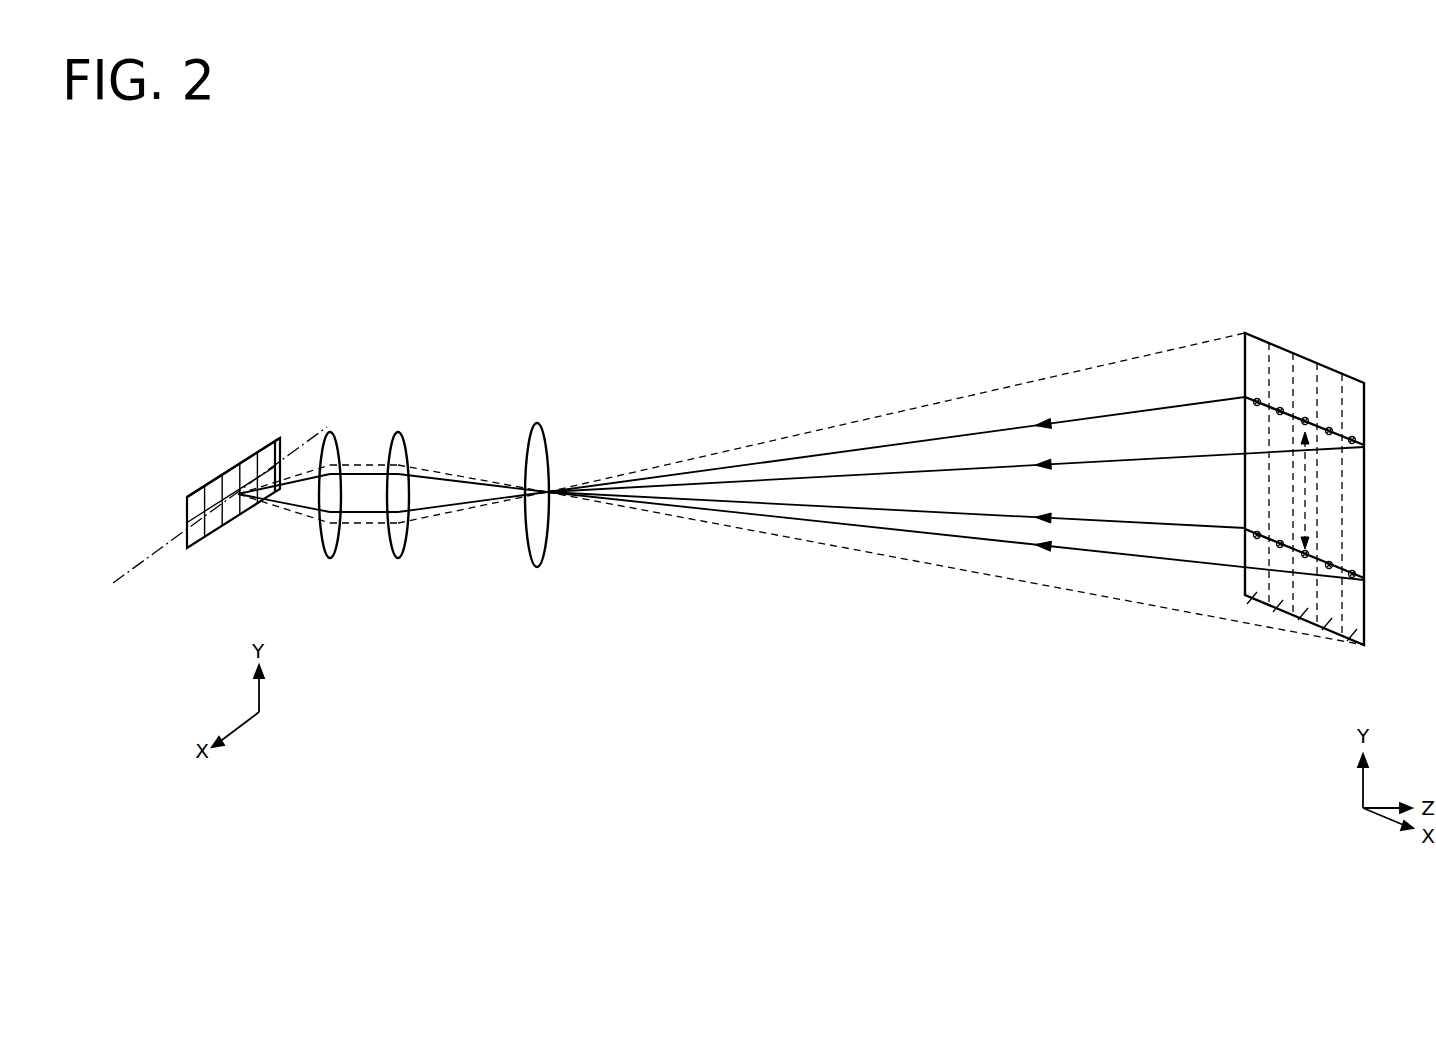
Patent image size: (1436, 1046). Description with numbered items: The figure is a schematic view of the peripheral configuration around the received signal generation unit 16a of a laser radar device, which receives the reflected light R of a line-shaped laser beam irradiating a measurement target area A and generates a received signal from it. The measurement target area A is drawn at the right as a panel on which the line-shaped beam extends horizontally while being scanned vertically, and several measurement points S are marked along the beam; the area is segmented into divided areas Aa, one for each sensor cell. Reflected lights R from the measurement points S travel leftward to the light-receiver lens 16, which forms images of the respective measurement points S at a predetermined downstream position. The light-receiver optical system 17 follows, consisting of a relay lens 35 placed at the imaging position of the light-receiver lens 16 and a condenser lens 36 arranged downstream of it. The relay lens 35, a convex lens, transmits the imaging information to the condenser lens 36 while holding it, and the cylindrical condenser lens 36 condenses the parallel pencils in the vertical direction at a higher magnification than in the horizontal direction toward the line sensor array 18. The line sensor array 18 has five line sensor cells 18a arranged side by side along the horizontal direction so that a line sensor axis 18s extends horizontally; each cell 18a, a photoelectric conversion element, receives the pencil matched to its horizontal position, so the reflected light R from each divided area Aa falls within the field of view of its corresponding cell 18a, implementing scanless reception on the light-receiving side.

The received signal generation unit 16a is at (552, 204).
The line sensor array 18 is at (176, 460).
The line sensor cell 18a is at (203, 495).
The line sensor axis 18s is at (170, 542).
The light-receiver optical system 17 is at (312, 358).
The condenser lens 36 is at (330, 432).
The relay lens 35 is at (398, 432).
The light-receiver lens 16 is at (537, 423).
The reflected light R is at (931, 439).
The measurement target area A is at (1335, 371).
The divided area Aa is at (1278, 606).
The measurement point S is at (1257, 402).